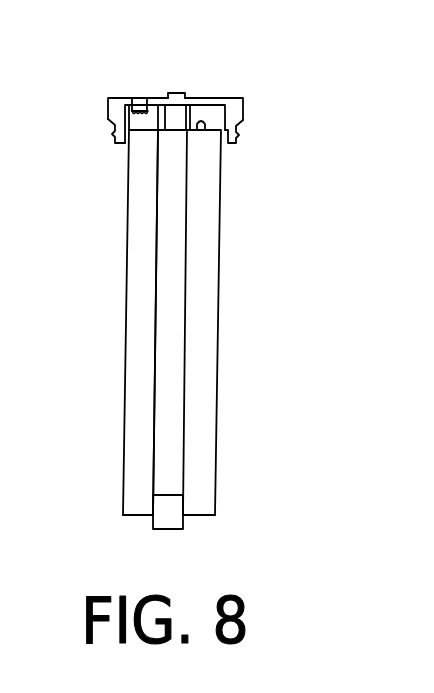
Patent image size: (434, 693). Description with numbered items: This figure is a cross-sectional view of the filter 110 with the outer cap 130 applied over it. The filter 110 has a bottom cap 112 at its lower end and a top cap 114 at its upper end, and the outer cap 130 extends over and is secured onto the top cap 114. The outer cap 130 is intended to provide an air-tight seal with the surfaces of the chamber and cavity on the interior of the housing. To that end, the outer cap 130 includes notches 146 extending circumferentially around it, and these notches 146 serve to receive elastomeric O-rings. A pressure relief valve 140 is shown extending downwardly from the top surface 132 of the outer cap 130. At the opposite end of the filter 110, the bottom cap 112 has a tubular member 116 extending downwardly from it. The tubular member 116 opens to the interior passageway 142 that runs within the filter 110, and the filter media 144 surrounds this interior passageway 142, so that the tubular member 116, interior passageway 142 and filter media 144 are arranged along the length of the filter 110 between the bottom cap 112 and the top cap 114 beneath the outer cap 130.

The filter 110 is at (210, 308).
The bottom cap 112 is at (207, 487).
The top cap 114 is at (119, 137).
The tubular member 116 is at (175, 515).
The outer cap 130 is at (236, 105).
The top surface 132 is at (203, 90).
The pressure relief valve 140 is at (132, 90).
The interior passageway 142 is at (167, 430).
The filter media 144 is at (200, 239).
The notches 146 is at (228, 125).